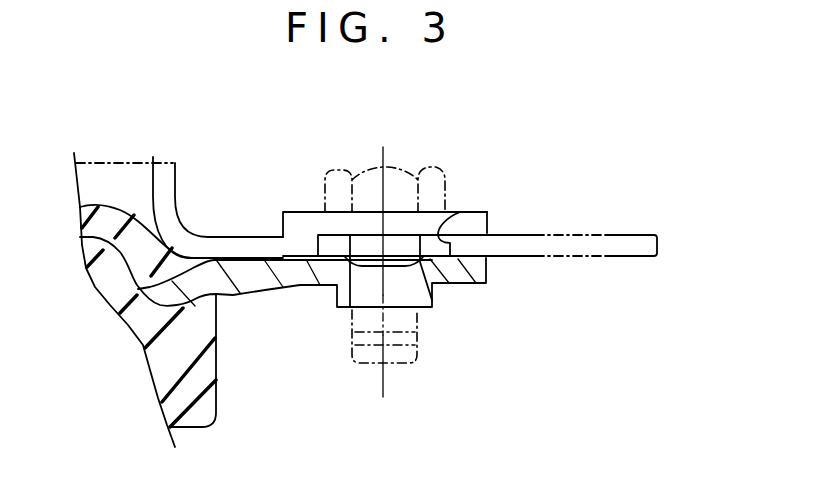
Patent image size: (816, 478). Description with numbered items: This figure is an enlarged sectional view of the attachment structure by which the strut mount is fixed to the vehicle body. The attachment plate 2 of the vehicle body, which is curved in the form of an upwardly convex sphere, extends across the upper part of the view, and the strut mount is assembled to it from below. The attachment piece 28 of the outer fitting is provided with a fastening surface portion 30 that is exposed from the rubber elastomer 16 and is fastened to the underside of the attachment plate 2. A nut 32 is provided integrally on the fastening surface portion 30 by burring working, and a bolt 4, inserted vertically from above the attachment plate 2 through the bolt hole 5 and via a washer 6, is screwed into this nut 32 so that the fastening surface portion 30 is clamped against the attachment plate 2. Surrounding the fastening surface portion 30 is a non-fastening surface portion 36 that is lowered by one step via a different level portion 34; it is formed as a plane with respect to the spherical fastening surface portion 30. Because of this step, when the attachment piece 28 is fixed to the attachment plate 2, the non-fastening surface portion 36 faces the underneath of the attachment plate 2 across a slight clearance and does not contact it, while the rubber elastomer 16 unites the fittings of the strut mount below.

The attachment plate 2 is at (622, 235).
The bolt 4 is at (448, 178).
The bolt hole 5 is at (457, 210).
The washer 6 is at (489, 226).
The rubber elastomer 16 is at (203, 404).
The attachment piece 28 is at (298, 277).
The fastening surface portion 30 is at (467, 255).
The nut 32 is at (432, 307).
The different level portion 34 is at (257, 258).
The non-fastening surface portion 36 is at (237, 260).